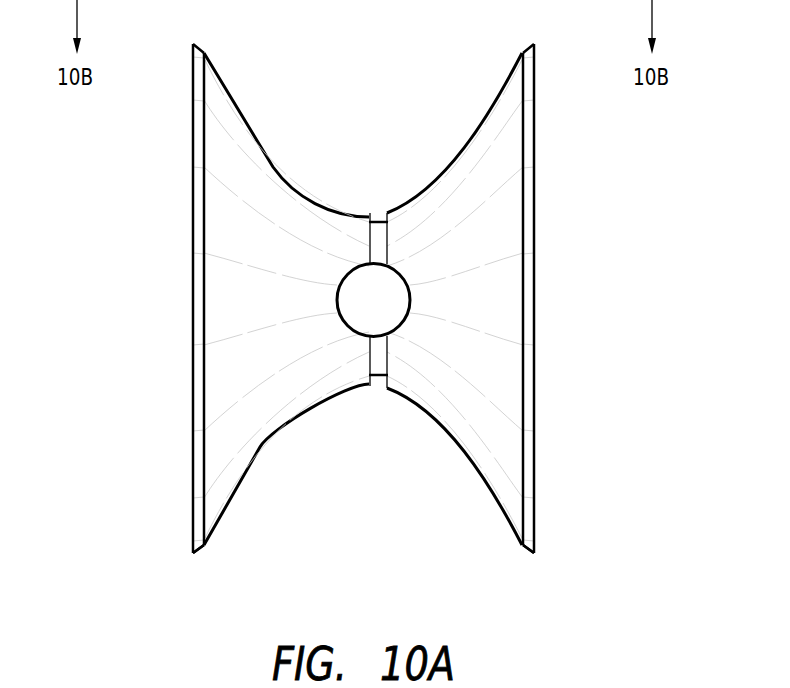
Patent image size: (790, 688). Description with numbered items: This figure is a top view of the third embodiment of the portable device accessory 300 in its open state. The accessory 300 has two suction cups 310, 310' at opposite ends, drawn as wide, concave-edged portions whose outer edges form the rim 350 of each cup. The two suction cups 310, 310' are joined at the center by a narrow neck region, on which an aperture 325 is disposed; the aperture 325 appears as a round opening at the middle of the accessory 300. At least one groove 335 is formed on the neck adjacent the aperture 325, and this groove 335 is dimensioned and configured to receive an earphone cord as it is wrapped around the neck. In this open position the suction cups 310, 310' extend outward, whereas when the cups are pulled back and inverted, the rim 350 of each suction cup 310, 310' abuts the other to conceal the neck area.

The portable device accessory 300 is at (222, 565).
The suction cup 310 is at (138, 298).
The suction cup 310' is at (600, 298).
The aperture 325 is at (353, 262).
The groove 335 is at (381, 377).
The rim 350 is at (199, 527).